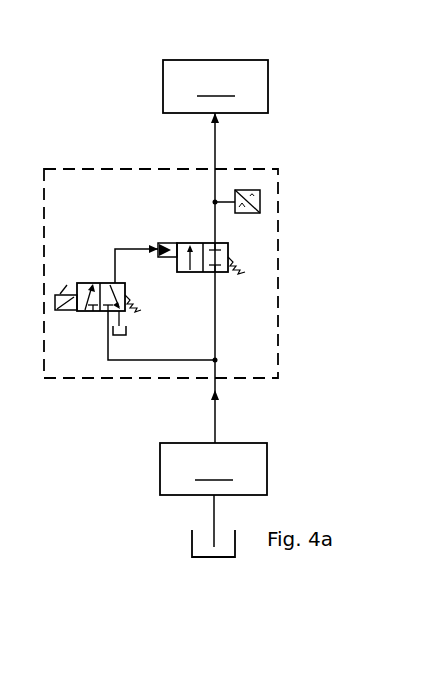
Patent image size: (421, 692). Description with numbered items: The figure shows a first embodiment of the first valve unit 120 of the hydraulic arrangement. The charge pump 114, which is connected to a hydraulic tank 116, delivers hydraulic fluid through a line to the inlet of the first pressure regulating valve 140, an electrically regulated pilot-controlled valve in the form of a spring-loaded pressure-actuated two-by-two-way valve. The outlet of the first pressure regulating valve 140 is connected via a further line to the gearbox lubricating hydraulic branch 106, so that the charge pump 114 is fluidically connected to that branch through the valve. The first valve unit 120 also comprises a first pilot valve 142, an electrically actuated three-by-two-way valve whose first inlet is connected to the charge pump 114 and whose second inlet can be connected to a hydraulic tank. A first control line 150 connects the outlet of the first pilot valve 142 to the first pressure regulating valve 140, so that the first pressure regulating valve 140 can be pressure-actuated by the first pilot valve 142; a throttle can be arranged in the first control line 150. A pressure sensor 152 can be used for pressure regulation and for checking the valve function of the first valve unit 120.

The gearbox lubricating hydraulic branch 106 is at (215, 86).
The charge pump 114 is at (213, 469).
The hydraulic tank 116 is at (213, 558).
The first valve unit 120 is at (178, 169).
The first pressure regulating valve 140 is at (228, 272).
The first pilot valve 142 is at (87, 313).
The first control line 150 is at (115, 248).
The pressure sensor 152 is at (260, 202).